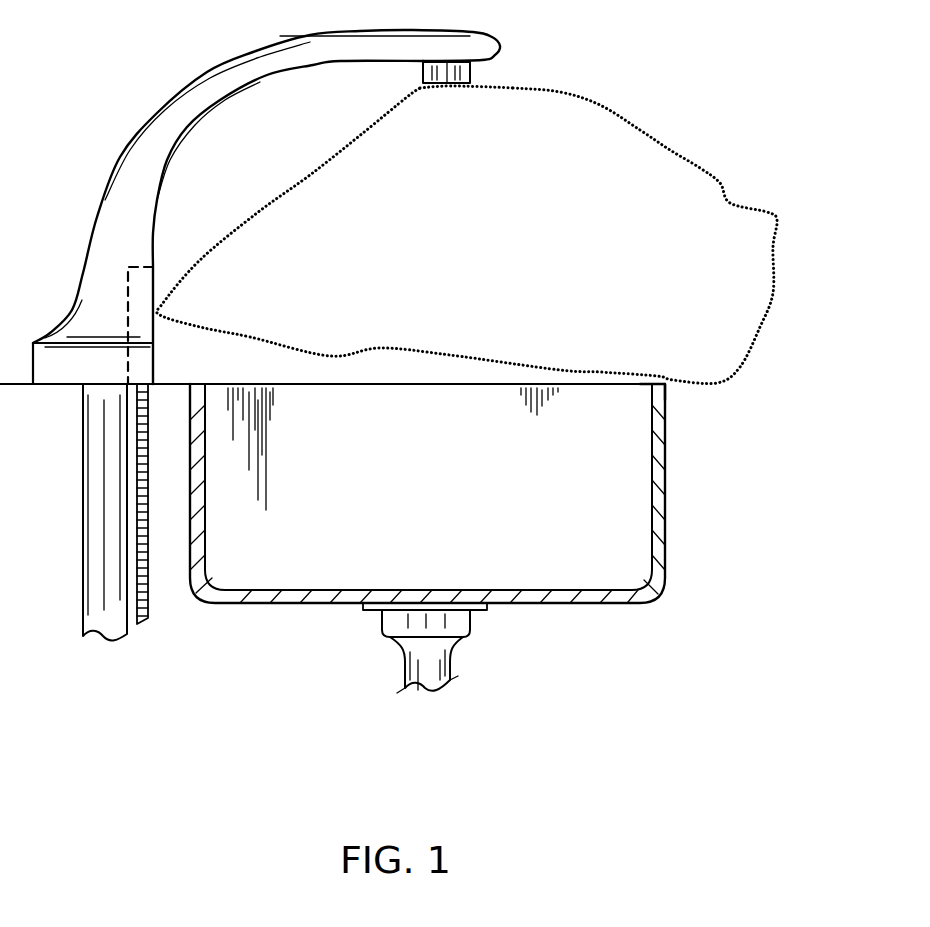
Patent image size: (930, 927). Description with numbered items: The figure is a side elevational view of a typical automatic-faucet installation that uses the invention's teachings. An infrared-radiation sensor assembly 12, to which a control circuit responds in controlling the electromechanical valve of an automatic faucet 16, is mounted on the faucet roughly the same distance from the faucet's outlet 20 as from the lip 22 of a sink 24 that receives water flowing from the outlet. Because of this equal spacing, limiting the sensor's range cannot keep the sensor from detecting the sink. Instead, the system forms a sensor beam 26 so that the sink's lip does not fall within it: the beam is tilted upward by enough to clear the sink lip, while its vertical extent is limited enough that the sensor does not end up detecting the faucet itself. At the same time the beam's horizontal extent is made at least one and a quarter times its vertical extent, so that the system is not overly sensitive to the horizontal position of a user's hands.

The infrared-radiation sensor assembly 12 is at (155, 265).
The automatic faucet 16 is at (483, 32).
The outlet 20 is at (445, 100).
The lip 22 is at (653, 382).
The sink 24 is at (667, 498).
The sensor beam 26 is at (765, 208).